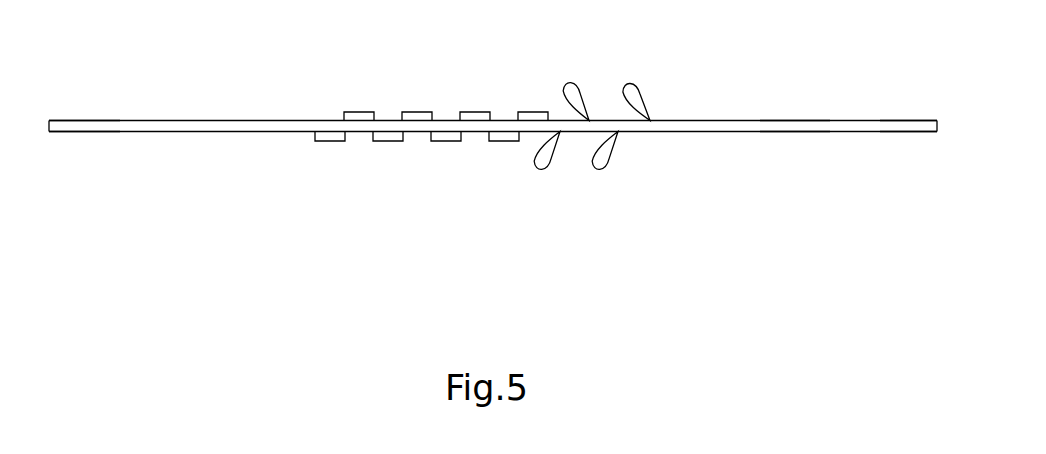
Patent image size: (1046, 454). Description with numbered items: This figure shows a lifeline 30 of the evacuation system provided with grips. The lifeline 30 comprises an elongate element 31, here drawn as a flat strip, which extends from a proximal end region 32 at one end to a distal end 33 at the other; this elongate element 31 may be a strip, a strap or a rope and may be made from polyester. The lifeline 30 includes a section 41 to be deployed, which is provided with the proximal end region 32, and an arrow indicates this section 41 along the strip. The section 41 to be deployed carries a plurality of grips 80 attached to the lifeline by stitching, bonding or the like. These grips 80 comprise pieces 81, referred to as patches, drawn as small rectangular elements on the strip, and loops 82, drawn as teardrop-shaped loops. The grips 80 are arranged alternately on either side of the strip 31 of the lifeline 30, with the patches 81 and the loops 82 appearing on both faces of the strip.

The lifeline 30 is at (158, 132).
The elongate element 31 is at (792, 132).
The proximal end region 32 is at (937, 132).
The distal end 33 is at (49, 132).
The section to be deployed 41 is at (401, 191).
The grips 80 is at (530, 102).
The pieces 81 is at (360, 112).
The loops 82 is at (633, 79).